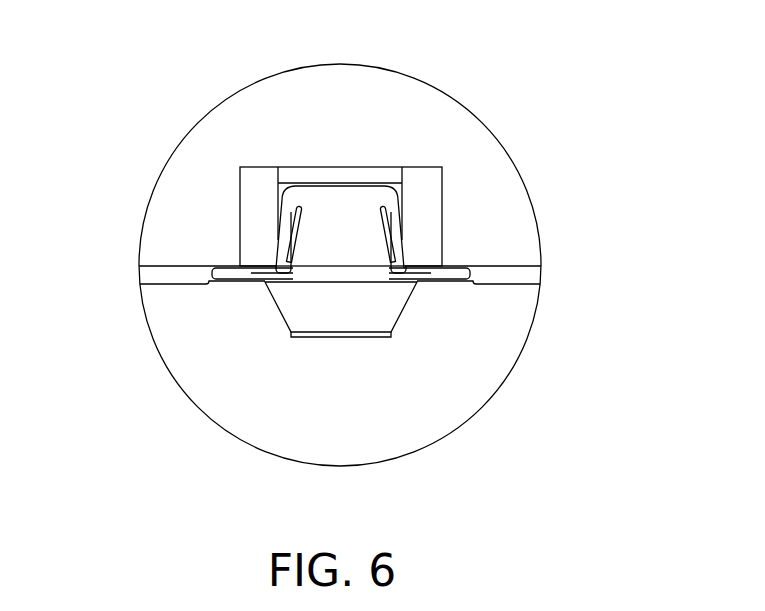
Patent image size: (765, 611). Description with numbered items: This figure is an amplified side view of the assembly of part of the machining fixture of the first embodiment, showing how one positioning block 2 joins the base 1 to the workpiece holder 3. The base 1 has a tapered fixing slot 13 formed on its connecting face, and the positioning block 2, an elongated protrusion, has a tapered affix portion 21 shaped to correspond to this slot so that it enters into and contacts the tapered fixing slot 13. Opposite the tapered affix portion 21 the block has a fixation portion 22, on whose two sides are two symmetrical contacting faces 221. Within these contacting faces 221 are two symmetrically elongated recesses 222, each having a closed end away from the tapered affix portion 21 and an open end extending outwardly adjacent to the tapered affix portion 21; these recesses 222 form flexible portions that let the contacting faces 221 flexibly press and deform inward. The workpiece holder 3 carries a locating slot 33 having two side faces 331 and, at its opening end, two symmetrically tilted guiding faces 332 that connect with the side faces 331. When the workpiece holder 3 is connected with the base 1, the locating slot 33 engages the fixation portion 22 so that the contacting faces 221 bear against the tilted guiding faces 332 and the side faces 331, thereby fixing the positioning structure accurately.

The base 1 is at (460, 378).
The tapered fixing slot 13 is at (278, 312).
The positioning block 2 is at (438, 257).
The tapered affix portion 21 is at (330, 312).
The fixation portion 22 is at (463, 141).
The contacting face 221 is at (403, 230).
The elongated recess 222 is at (386, 247).
The workpiece holder 3 is at (322, 133).
The locating slot 33 is at (322, 184).
The side face 331 is at (279, 217).
The tilted guiding face 332 is at (273, 252).